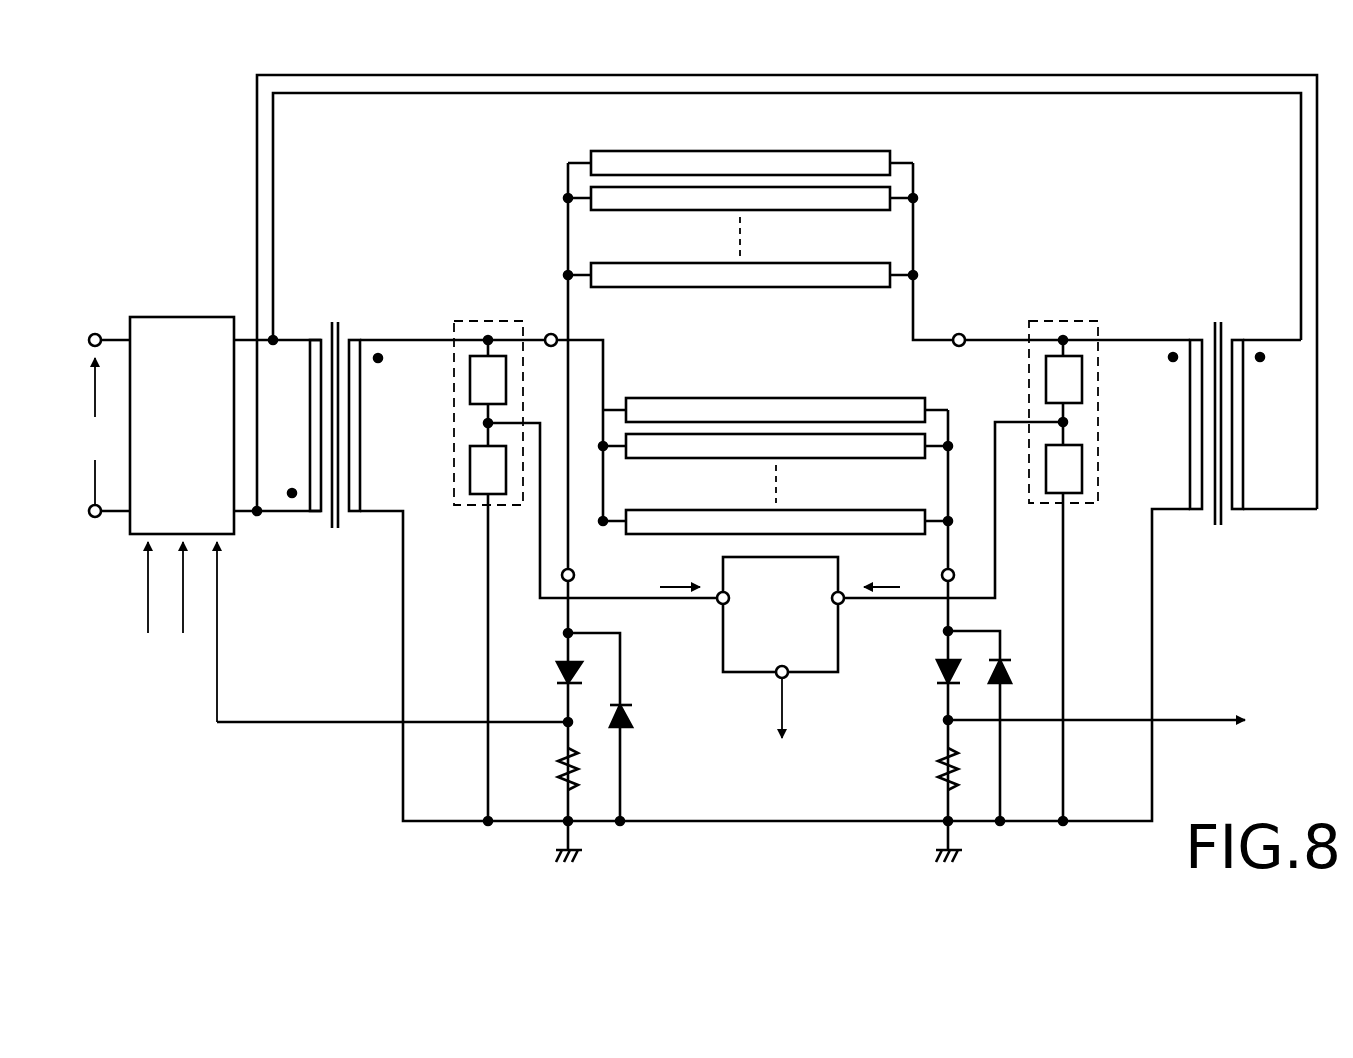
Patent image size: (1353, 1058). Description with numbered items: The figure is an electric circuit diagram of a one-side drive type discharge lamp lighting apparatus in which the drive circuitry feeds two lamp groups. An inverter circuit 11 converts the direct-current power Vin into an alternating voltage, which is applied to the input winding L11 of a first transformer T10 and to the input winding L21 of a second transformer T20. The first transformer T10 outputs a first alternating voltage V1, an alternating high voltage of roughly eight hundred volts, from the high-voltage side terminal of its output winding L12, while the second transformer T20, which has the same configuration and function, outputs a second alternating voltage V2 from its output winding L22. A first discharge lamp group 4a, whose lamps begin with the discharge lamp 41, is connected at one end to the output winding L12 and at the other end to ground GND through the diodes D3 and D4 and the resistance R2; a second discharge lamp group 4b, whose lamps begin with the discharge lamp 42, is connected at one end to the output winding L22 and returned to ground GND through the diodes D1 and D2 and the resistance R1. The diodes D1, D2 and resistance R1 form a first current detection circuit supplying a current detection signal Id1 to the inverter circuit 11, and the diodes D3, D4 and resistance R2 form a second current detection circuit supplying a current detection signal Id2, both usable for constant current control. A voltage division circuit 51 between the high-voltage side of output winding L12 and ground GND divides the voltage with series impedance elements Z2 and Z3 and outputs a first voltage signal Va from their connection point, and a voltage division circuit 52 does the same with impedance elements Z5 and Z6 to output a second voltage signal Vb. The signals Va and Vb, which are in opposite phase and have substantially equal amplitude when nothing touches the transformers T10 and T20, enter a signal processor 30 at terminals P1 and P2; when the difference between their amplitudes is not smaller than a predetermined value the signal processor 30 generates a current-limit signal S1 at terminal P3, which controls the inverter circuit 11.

The inverter circuit 11 is at (178, 317).
The first transformer T10 is at (345, 310).
The input winding L11 is at (313, 338).
The output winding L12 is at (350, 513).
The second transformer T20 is at (1221, 308).
The input winding L21 is at (1240, 511).
The output winding L22 is at (1196, 338).
The voltage division circuit 51 is at (465, 551).
The voltage division circuit 52 is at (1087, 551).
The impedance element Z2 is at (470, 375).
The impedance element Z3 is at (470, 462).
The impedance element Z5 is at (1082, 375).
The impedance element Z6 is at (1082, 462).
The first discharge lamp group 4a is at (775, 575).
The second discharge lamp group 4b is at (778, 465).
The discharge lamp 41 is at (655, 510).
The discharge lamp 42 is at (620, 263).
The signal processor 30 is at (784, 647).
The input terminal P1 is at (718, 606).
The input terminal P2 is at (845, 604).
The output terminal P3 is at (776, 680).
The diode D1 is at (556, 680).
The diode D2 is at (633, 718).
The diode D3 is at (936, 681).
The diode D4 is at (1017, 665).
The resistance R1 is at (560, 770).
The resistance R2 is at (940, 770).
The ground GND is at (556, 856).
The direct-current power Vin is at (108, 425).
The first alternating voltage V1 is at (409, 338).
The second alternating voltage V2 is at (974, 339).
The first voltage signal Va is at (686, 585).
The second voltage signal Vb is at (874, 585).
The current-limit signal S1 is at (146, 597).
The current detection signal Id1 is at (220, 590).
The current detection signal Id2 is at (180, 628).